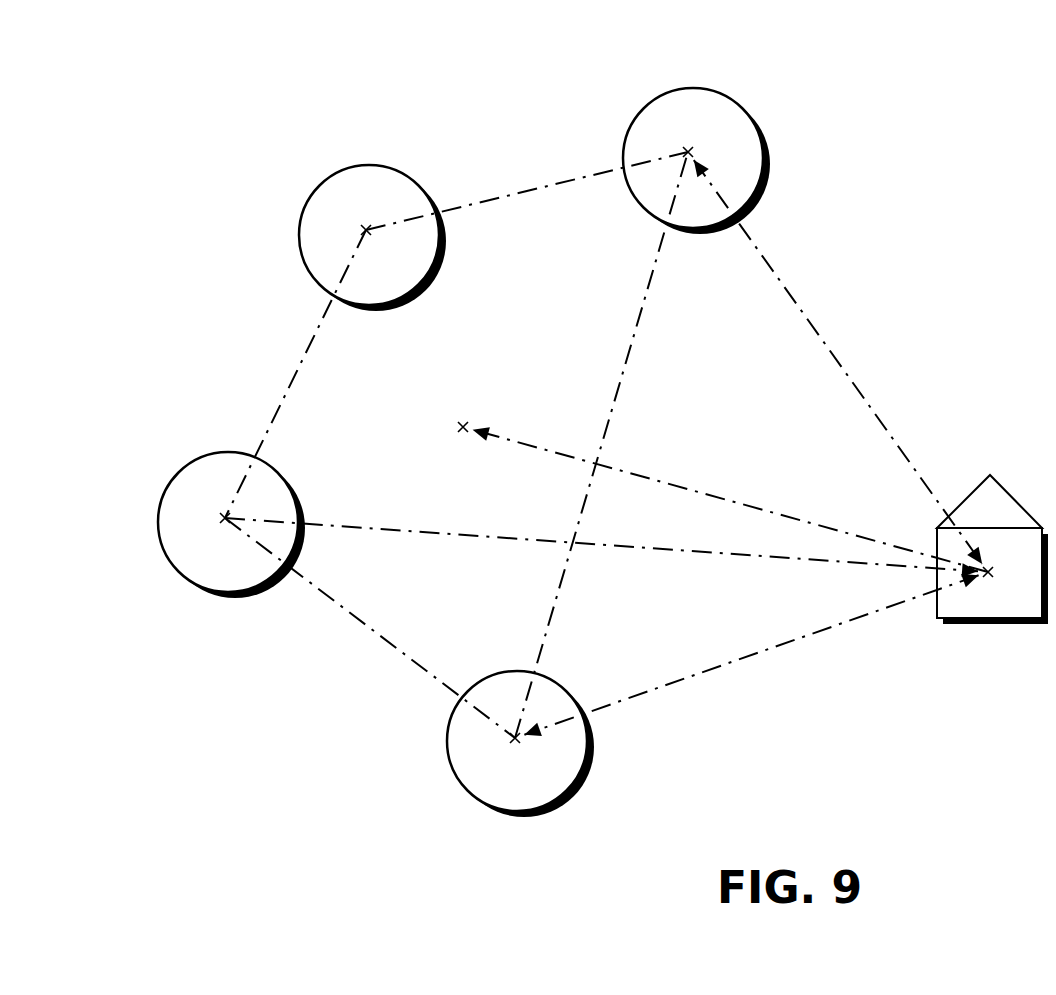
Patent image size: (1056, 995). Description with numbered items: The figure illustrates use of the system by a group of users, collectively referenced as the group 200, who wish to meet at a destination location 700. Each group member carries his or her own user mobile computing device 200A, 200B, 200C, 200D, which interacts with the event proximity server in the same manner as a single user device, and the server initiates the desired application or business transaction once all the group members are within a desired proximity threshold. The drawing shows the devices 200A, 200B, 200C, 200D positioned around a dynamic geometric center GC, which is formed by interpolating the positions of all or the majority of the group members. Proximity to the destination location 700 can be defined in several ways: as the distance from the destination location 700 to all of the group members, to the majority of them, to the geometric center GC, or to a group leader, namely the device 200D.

The group of users 200 is at (484, 134).
The user mobile computing device 200A is at (696, 137).
The user mobile computing device 200B is at (372, 220).
The user mobile computing device 200C is at (231, 504).
The user mobile computing device of group leader 200D is at (520, 764).
The dynamic geometric center GC is at (467, 411).
The destination location 700 is at (992, 530).